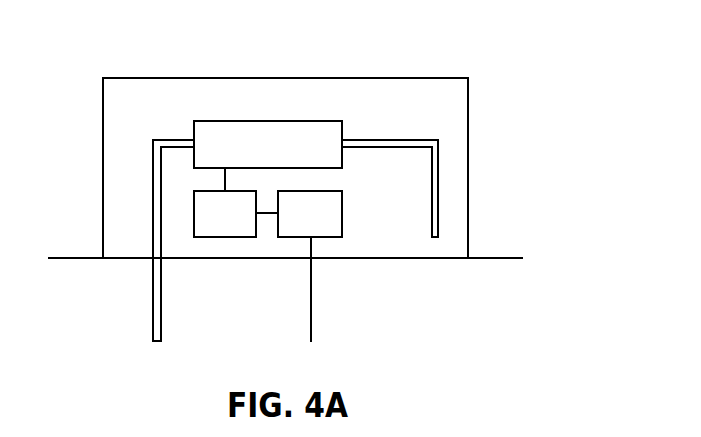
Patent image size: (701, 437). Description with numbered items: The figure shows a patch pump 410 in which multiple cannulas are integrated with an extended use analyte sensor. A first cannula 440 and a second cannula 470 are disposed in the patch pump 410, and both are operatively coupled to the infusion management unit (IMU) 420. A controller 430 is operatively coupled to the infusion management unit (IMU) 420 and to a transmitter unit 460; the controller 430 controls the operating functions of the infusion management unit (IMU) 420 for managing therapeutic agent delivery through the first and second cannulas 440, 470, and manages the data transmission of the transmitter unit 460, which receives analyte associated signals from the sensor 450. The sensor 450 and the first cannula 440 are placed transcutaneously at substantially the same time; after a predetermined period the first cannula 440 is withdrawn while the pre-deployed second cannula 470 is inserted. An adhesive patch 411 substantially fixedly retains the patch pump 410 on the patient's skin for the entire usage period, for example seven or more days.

The patch pump 410 is at (414, 78).
The adhesive patch 411 is at (497, 258).
The infusion management unit (IMU) 420 is at (241, 121).
The controller 430 is at (225, 237).
The first cannula 440 is at (153, 303).
The sensor 450 is at (311, 315).
The transmitter unit 460 is at (342, 213).
The second cannula 470 is at (438, 182).